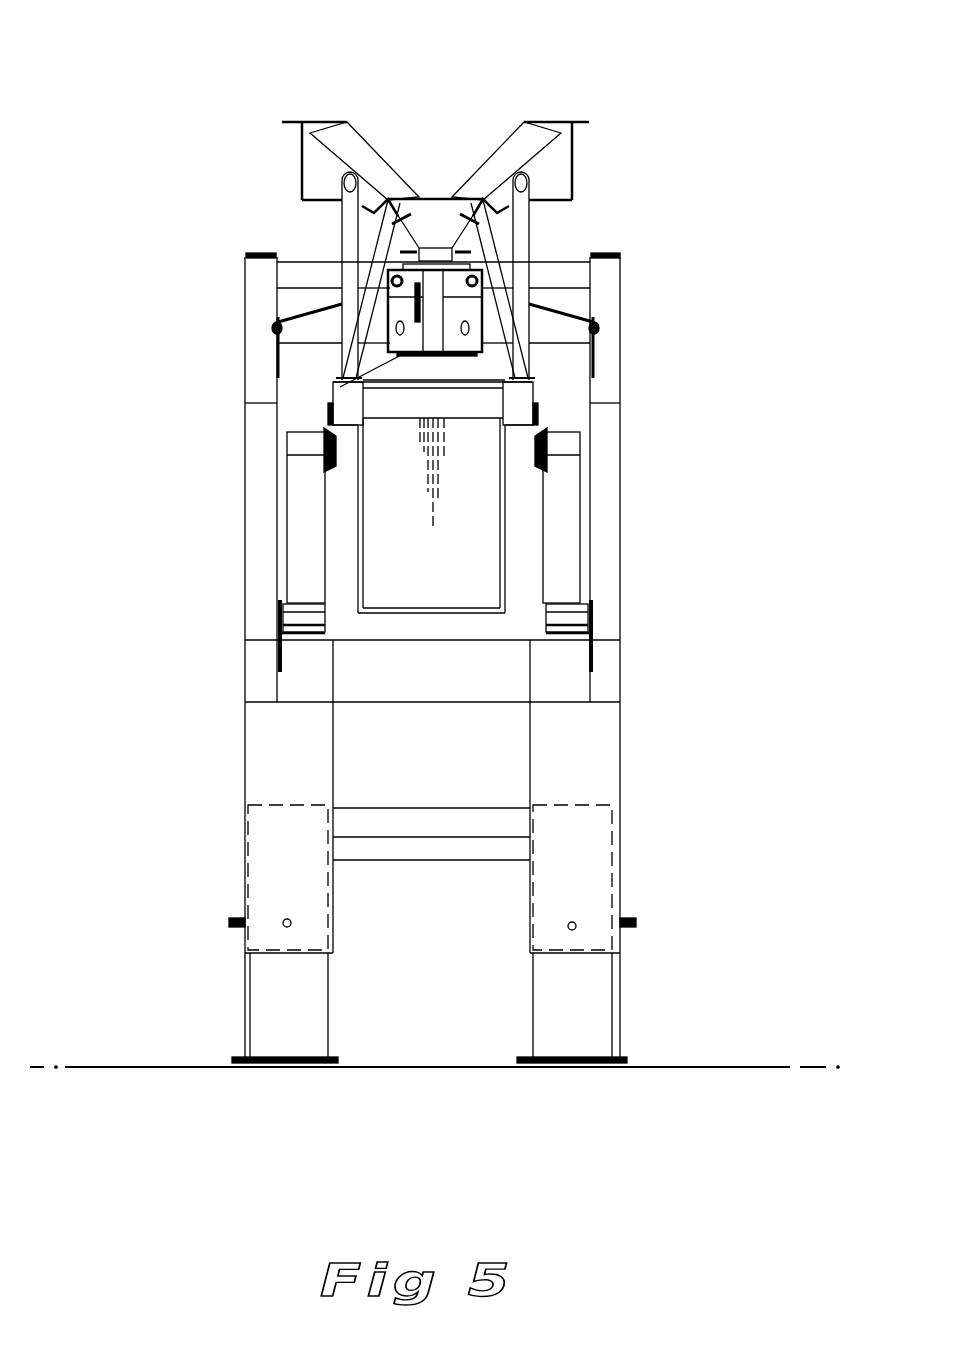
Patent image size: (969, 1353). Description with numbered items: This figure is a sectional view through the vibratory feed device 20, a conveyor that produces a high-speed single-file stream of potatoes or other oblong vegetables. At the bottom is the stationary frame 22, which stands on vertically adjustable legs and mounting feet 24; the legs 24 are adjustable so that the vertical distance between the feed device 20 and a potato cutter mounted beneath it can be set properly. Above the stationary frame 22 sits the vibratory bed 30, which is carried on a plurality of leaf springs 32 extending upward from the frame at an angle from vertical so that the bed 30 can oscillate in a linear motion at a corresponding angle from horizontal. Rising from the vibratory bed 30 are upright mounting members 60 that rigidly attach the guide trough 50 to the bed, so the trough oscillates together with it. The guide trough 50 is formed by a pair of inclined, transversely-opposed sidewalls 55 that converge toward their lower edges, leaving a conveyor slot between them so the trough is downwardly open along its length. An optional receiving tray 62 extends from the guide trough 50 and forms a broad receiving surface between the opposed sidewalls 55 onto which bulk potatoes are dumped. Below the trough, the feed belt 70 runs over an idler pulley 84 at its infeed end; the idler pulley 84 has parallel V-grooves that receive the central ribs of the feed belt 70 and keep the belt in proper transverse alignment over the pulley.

The feed device 20 is at (203, 316).
The stationary frame 22 is at (258, 472).
The legs and mounting feet 24 is at (260, 870).
The vibratory bed 30 is at (483, 405).
The leaf springs 32 is at (298, 532).
The guide trough 50 is at (545, 150).
The sidewalls 55 is at (357, 152).
The upright mounting members 60 is at (381, 247).
The receiving tray 62 is at (302, 178).
The feed belt 70 is at (433, 246).
The idler pulley 84 is at (340, 387).